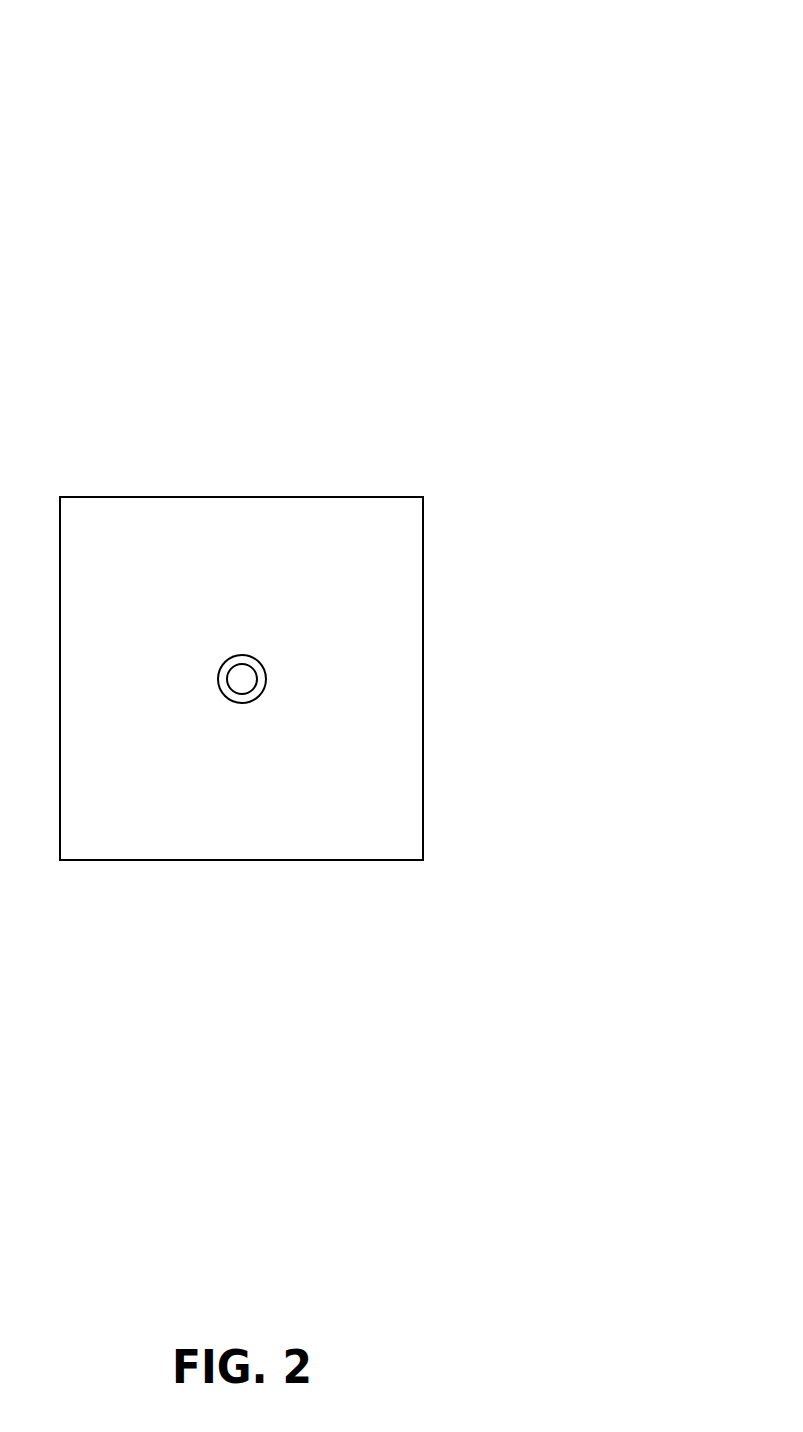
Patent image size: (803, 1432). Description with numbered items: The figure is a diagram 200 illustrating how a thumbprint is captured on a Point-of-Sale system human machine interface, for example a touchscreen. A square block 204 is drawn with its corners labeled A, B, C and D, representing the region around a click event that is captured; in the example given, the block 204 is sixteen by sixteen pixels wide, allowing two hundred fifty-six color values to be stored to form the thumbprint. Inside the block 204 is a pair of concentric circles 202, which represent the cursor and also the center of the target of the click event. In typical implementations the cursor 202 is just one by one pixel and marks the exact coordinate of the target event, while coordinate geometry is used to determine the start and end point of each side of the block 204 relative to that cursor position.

The diagram 200 is at (374, 451).
The cursor 202 is at (242, 655).
The block 204 is at (238, 508).